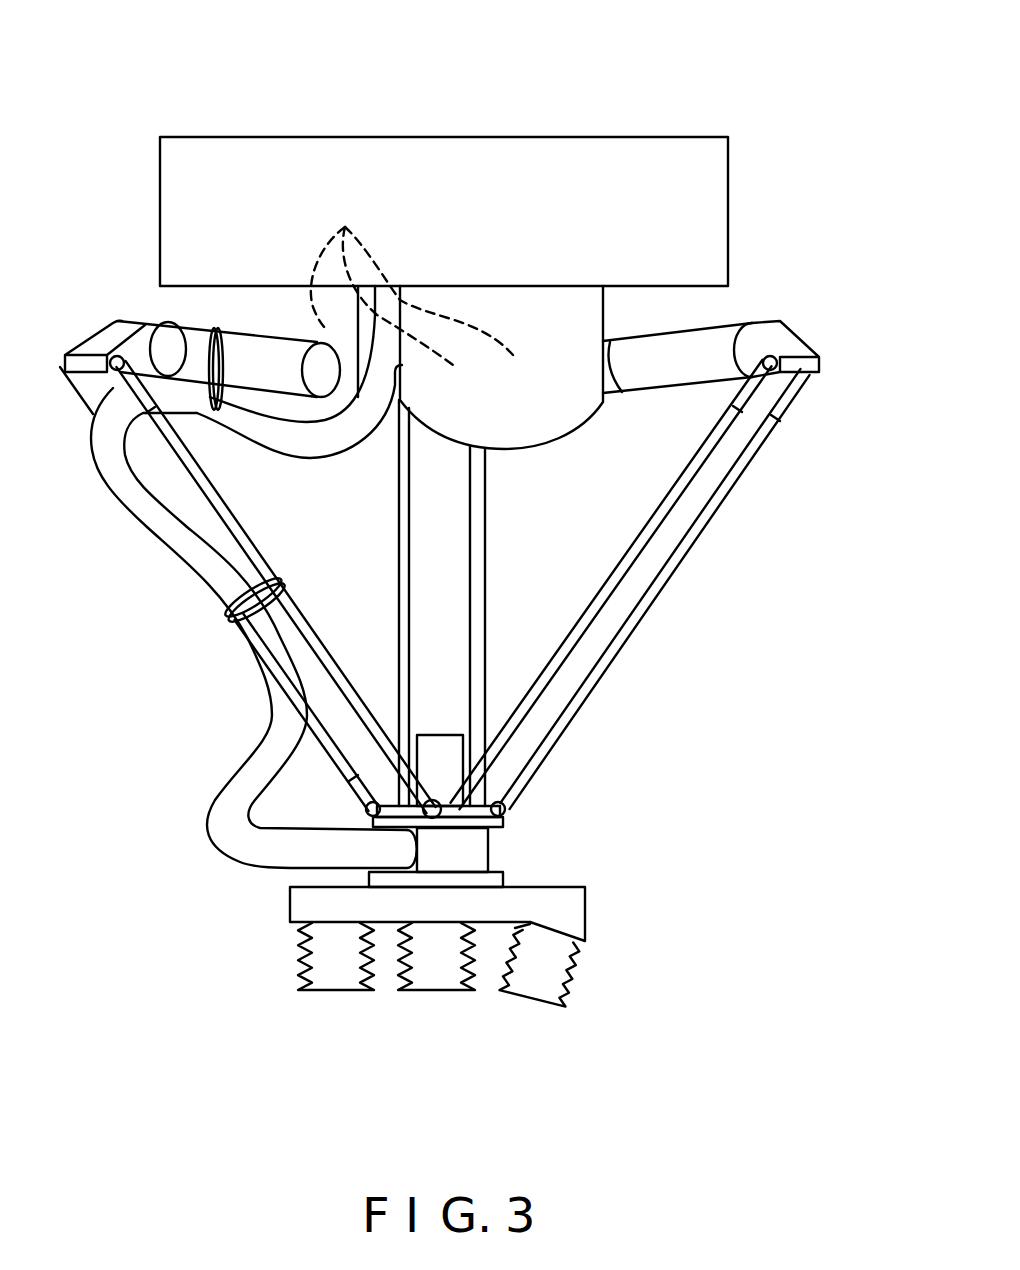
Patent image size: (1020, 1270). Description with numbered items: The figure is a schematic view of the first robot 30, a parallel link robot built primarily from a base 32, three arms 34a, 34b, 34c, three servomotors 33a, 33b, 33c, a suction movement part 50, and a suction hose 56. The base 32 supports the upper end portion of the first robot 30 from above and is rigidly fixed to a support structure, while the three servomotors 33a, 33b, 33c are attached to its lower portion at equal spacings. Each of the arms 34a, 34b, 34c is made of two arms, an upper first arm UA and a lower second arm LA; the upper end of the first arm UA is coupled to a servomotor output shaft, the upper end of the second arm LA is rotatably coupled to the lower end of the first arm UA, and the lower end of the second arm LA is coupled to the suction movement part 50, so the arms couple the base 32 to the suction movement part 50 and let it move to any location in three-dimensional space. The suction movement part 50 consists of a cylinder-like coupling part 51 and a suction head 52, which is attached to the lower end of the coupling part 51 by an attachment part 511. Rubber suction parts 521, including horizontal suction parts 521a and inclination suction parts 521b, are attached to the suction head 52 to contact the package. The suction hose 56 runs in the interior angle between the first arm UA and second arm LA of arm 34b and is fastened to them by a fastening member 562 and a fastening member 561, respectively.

The first robot 30 is at (730, 96).
The base 32 is at (237, 175).
The servomotor 33a is at (396, 264).
The servomotor 33b is at (398, 296).
The servomotor 33c is at (429, 291).
The first arm UA is at (442, 330).
The second arm LA is at (435, 586).
The arm 34a is at (497, 543).
The arm 34b is at (328, 628).
The arm 34c is at (642, 648).
The suction movement part 50 is at (451, 946).
The coupling part 51 is at (483, 848).
The attachment part 511 is at (505, 882).
The suction head 52 is at (290, 910).
The suction part 521 is at (435, 1002).
The horizontal suction part 521a is at (381, 1002).
The inclination suction part 521b is at (543, 1002).
The suction hose 56 is at (254, 577).
The fastening member 561 is at (238, 615).
The fastening member 562 is at (205, 328).